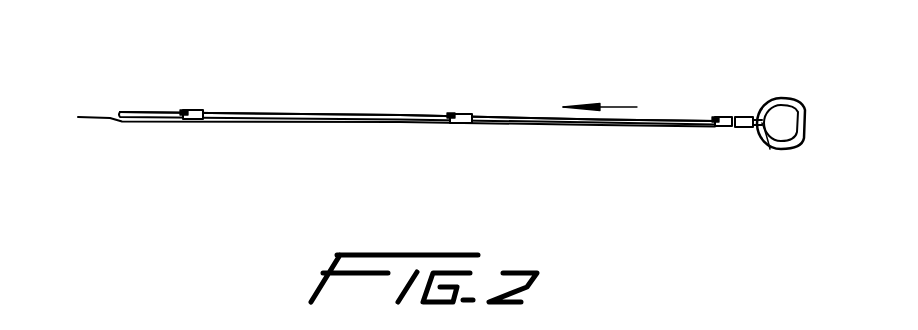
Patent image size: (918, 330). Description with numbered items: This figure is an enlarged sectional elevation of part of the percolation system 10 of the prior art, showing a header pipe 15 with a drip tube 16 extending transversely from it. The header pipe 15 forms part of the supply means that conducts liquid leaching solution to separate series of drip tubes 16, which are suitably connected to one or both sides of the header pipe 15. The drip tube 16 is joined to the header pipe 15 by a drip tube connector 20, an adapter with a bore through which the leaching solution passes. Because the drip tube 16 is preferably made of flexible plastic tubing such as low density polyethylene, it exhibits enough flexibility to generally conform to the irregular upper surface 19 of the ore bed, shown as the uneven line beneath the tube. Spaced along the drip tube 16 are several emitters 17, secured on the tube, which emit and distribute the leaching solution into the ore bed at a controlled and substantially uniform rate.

The percolation system 10 is at (400, 77).
The header pipe 15 is at (778, 98).
The drip tube 16 is at (342, 117).
The emitter 17 is at (195, 109).
The irregular upper surface 19 is at (98, 117).
The drip tube connector 20 is at (770, 149).